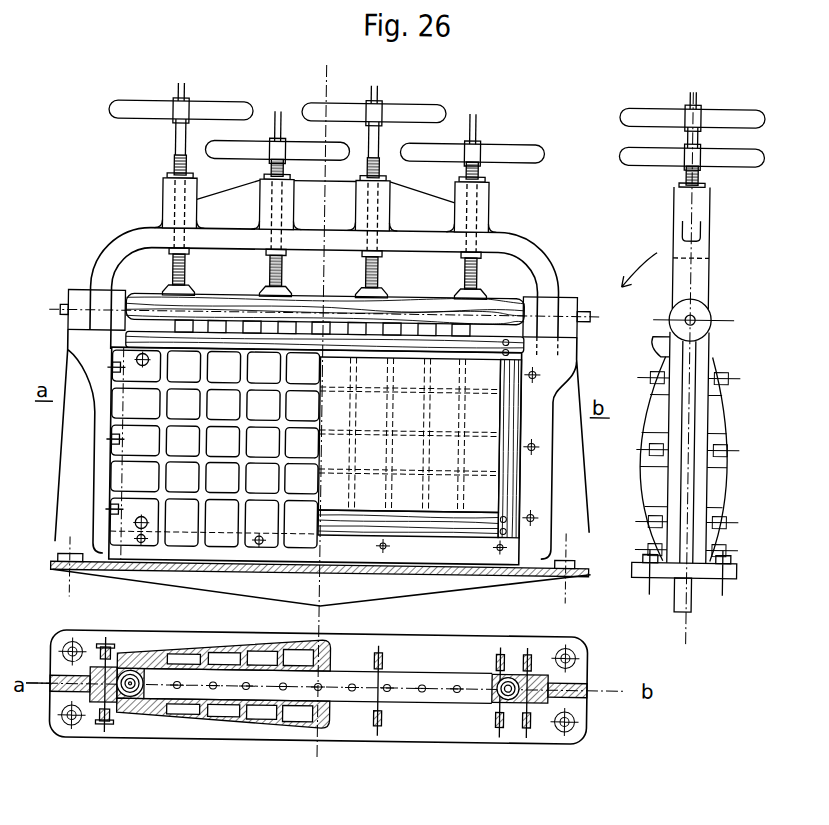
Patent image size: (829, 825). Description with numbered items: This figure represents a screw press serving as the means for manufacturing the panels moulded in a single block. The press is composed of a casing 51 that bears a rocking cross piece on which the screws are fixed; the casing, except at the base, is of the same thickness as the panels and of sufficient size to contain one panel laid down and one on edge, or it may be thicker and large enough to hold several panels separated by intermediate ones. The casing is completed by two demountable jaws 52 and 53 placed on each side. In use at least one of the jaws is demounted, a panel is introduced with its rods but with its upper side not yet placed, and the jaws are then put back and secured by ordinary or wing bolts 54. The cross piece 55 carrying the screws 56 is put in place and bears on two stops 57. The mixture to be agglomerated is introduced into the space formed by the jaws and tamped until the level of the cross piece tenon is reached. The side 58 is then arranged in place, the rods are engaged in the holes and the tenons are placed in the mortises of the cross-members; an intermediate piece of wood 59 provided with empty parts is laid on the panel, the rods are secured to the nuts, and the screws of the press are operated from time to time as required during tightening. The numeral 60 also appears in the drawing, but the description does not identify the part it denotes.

The casing 51 is at (579, 436).
The demountable jaw 52 is at (278, 628).
The demountable jaw 53 is at (215, 729).
The wing bolts 54 is at (139, 548).
The cross piece 55 is at (603, 264).
The screws 56 is at (443, 348).
The stops 57 is at (660, 334).
The side 58 is at (525, 294).
The intermediate piece of wood 59 is at (150, 300).
The pivot bolt 60 is at (138, 359).